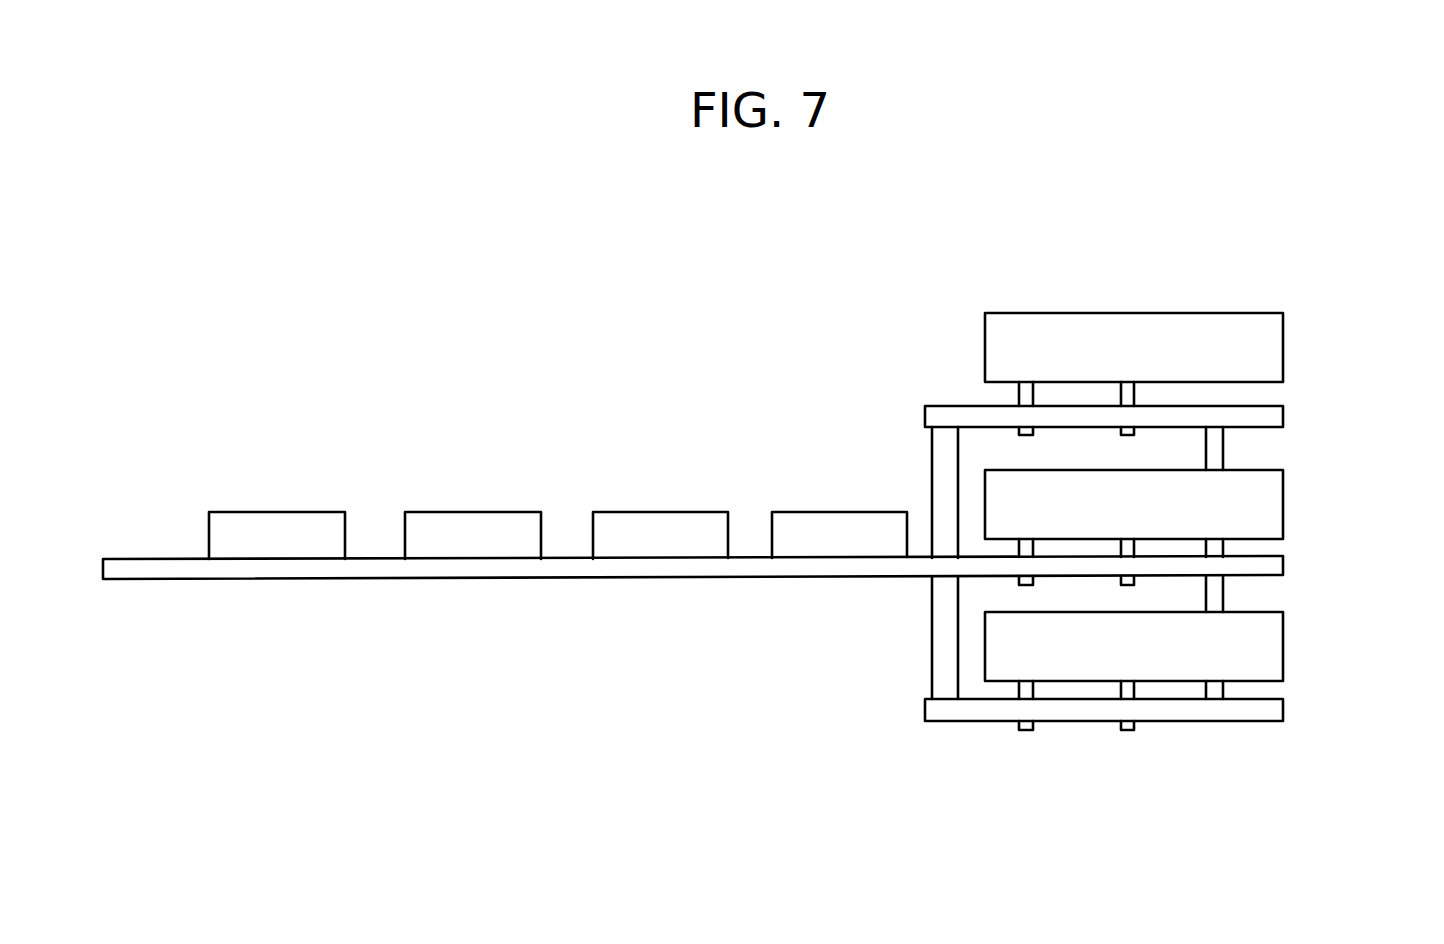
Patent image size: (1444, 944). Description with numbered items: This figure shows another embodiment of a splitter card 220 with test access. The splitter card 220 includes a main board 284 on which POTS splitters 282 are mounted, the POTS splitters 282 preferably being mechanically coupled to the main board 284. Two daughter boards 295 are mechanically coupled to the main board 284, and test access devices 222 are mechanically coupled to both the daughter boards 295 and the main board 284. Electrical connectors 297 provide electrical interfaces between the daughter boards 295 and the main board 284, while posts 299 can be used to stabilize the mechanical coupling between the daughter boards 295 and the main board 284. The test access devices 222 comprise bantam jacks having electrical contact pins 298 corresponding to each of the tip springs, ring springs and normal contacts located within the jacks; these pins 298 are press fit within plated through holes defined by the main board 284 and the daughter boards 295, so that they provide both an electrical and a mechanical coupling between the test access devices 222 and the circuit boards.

The splitter card 220 is at (725, 388).
The test access devices 222 is at (1168, 311).
The POTS splitters 282 is at (288, 512).
The main board 284 is at (566, 578).
The daughter boards 295 is at (1285, 413).
The electrical connectors 297 is at (942, 477).
The electrical contact pins 298 is at (1019, 400).
The posts 299 is at (1223, 447).